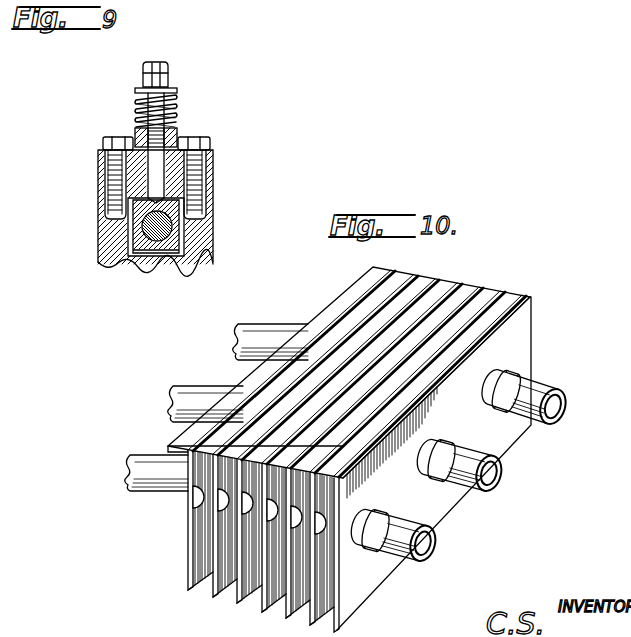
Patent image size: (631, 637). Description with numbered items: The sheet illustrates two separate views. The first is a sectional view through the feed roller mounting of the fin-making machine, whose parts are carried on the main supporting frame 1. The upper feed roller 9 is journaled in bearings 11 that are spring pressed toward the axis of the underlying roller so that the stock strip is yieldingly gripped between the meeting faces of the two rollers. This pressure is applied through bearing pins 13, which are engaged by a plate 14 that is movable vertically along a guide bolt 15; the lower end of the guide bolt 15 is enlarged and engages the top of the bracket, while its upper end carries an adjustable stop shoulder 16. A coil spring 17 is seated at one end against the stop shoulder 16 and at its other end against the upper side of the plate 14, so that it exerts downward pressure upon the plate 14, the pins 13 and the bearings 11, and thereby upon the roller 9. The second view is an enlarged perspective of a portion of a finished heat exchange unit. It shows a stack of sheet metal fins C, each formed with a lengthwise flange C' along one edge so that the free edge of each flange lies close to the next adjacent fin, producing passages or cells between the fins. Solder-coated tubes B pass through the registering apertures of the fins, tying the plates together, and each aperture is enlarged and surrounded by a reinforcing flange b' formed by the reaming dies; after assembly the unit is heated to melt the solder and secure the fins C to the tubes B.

In FIG. 9, the main supporting frame 1 is at (199, 262).
In FIG. 9, the upper feed roller 9 is at (180, 227).
In FIG. 9, the bearings 11 is at (128, 240).
In FIG. 9, the bearing pins 13 is at (213, 164).
In FIG. 9, the plate 14 is at (178, 135).
In FIG. 9, the guide bolt 15 is at (160, 60).
In FIG. 9, the adjustable stop shoulder 16 is at (177, 89).
In FIG. 9, the coil spring 17 is at (177, 105).
In FIG. 10, the tubes B is at (548, 388).
In FIG. 10, the reinforcing flanges b' is at (304, 409).
In FIG. 10, the fins C is at (335, 466).
In FIG. 10, the lengthwise flanges C' is at (349, 361).